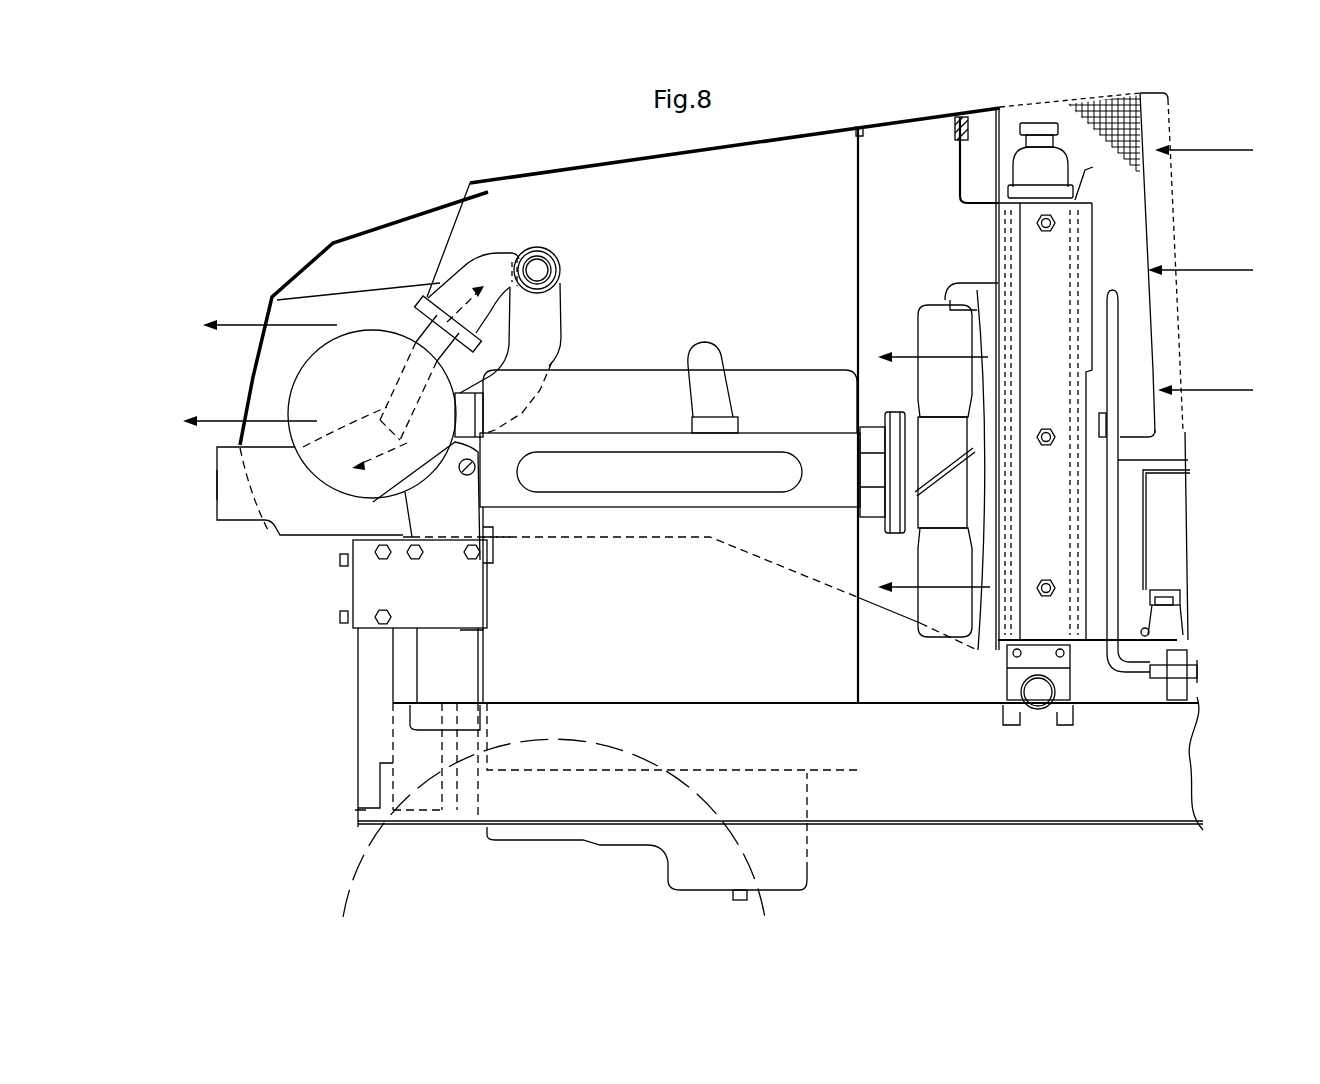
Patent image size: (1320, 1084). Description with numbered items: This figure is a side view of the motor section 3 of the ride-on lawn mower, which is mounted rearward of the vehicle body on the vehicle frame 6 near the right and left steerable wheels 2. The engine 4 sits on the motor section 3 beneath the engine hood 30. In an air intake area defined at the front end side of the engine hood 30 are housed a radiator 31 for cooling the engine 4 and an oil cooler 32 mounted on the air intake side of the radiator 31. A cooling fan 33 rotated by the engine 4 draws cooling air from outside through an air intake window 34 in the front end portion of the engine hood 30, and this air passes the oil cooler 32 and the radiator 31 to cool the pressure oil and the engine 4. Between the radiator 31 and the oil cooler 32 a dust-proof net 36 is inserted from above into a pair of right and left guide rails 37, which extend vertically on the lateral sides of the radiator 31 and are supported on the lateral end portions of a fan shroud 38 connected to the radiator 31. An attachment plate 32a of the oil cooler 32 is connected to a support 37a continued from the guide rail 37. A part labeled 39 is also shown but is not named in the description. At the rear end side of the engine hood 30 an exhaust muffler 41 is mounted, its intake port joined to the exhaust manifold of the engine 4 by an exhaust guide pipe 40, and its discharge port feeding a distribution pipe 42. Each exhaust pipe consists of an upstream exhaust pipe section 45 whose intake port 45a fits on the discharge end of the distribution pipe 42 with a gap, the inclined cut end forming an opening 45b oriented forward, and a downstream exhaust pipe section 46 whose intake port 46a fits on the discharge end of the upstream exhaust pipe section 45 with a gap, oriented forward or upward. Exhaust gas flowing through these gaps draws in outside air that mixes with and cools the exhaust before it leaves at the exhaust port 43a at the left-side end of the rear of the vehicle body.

The steerable wheels 2 is at (350, 877).
The motor section 3 is at (433, 165).
The engine 4 is at (755, 375).
The vehicle frame 6 is at (1195, 722).
The engine hood 30 is at (537, 172).
The radiator 31 is at (1020, 176).
The oil cooler 32 is at (1126, 332).
The attachment plate 32a is at (1112, 383).
The cooling fan 33 is at (927, 318).
The air intake window 34 is at (1002, 100).
The dust-proof net 36 is at (1090, 245).
The guide rails 37 is at (1093, 275).
The support 37a is at (1093, 427).
The fan shroud 38 is at (968, 288).
The hood side cover 39 is at (250, 392).
The exhaust guide pipe 40 is at (480, 412).
The exhaust muffler 41 is at (373, 338).
The distribution pipe 42 is at (499, 263).
The exhaust port 43a is at (203, 492).
The upstream exhaust pipe section 45 is at (561, 333).
The intake port 45a is at (561, 253).
The opening 45b is at (562, 273).
The downstream exhaust pipe section 46 is at (246, 513).
The intake port 46a is at (380, 402).